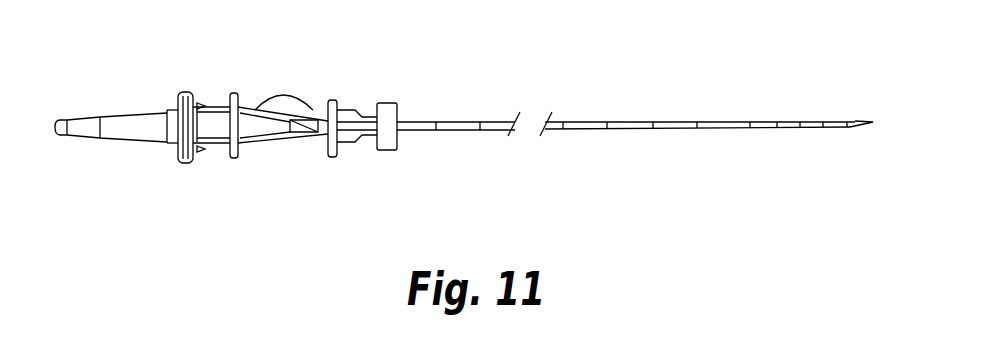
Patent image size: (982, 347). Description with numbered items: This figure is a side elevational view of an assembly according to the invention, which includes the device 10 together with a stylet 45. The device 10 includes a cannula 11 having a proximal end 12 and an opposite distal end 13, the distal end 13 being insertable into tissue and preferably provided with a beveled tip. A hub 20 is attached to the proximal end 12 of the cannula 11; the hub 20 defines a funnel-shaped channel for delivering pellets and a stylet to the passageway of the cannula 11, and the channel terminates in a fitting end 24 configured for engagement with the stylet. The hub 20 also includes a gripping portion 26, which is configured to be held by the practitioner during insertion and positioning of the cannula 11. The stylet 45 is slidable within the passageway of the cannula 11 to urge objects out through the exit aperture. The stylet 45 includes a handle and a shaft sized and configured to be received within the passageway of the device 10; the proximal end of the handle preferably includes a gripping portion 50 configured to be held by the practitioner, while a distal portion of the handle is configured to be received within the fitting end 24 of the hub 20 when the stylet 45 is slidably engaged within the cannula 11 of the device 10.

The device 10 is at (858, 202).
The cannula 11 is at (640, 122).
The proximal end 12 is at (413, 121).
The distal end 13 is at (862, 120).
The hub 20 is at (362, 50).
The fitting end 24 is at (216, 100).
The gripping portion 26 is at (284, 146).
The stylet 45 is at (86, 117).
The gripping portion 50 is at (150, 146).